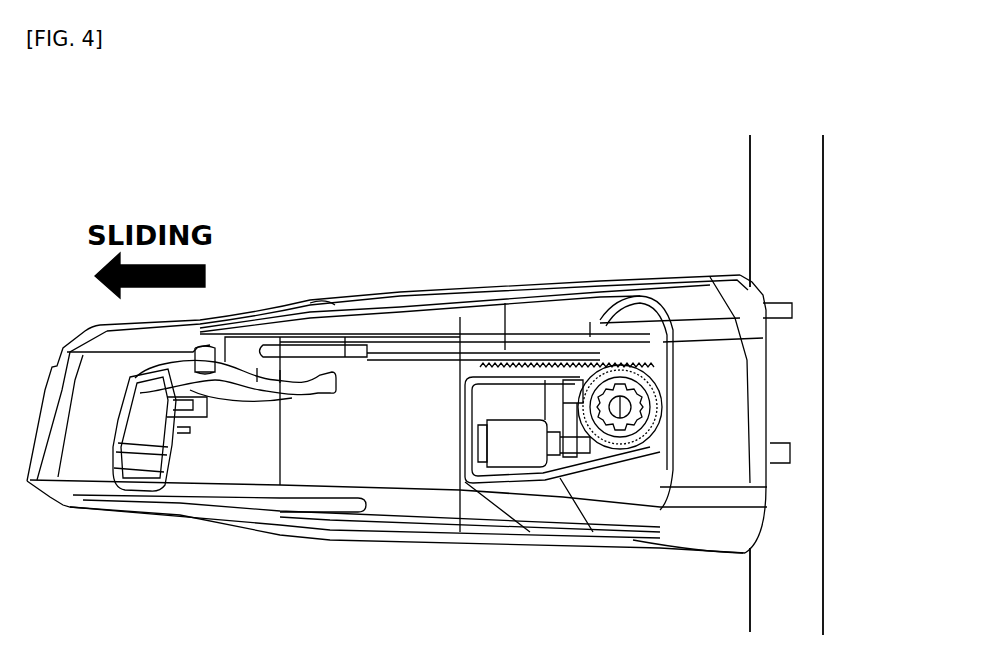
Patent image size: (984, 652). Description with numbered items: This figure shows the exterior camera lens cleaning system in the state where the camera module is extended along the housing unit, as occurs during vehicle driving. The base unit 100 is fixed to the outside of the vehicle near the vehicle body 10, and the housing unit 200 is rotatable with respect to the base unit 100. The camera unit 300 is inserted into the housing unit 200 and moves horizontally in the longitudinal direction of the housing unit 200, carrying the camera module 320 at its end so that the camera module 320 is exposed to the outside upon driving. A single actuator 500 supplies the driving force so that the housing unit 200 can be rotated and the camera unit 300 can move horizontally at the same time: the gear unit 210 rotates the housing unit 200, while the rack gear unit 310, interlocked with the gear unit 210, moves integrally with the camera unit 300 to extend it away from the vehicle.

The vehicle body 10 is at (780, 247).
The base unit 100 is at (727, 413).
The housing unit 200 is at (503, 308).
The gear unit 210 is at (638, 430).
The camera unit 300 is at (250, 460).
The rack gear unit 310 is at (523, 368).
The camera module 320 is at (143, 465).
The actuator 500 is at (515, 450).